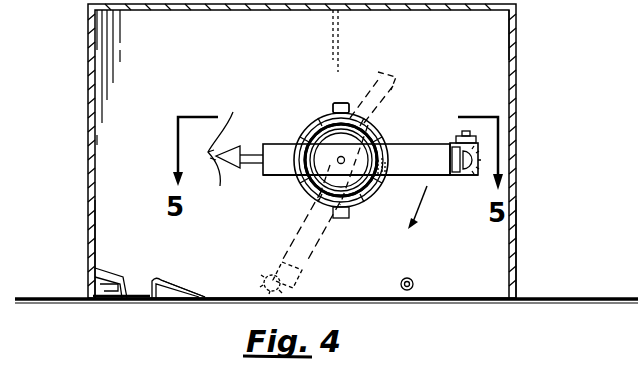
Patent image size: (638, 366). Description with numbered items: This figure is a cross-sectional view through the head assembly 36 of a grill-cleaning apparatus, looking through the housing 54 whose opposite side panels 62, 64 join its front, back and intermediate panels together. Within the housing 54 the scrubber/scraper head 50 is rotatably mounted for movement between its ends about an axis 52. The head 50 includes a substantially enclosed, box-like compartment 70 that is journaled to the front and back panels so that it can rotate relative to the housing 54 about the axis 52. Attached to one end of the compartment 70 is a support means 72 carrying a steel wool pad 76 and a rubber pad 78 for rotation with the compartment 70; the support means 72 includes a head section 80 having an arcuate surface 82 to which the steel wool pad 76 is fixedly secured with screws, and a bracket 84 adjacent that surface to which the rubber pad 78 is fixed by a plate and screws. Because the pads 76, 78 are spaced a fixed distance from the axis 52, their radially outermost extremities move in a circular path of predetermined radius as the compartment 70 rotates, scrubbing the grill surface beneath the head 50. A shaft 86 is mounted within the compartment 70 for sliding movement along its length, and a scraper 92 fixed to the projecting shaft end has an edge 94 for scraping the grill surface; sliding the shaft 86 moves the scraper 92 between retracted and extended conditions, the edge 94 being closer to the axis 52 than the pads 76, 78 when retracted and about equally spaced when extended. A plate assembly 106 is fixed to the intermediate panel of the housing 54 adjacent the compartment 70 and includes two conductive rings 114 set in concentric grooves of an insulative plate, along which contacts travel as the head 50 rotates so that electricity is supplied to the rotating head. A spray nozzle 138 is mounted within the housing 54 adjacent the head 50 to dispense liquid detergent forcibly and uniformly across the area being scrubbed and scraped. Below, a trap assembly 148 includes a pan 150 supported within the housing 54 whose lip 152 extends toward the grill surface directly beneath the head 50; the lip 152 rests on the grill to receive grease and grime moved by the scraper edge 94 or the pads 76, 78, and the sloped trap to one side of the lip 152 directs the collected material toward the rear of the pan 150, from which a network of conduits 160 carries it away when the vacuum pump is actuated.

The head assembly 36 is at (492, 91).
The housing 54 is at (517, 40).
The side panel 64 is at (518, 240).
The scrubber/scraper head 50 is at (400, 143).
The head section 80 is at (452, 160).
The compartment 70 is at (278, 170).
The axis 52 is at (338, 157).
The plate assembly 106 is at (319, 108).
The conductive rings 114 is at (369, 196).
The support means 72 is at (431, 176).
The scraper 92 is at (388, 74).
The scraper edge 94 is at (226, 140).
The shaft 86 is at (252, 148).
The bracket 84 is at (452, 140).
The rubber pad 78 is at (487, 141).
The steel wool pad 76 is at (478, 163).
The arcuate surface 82 is at (463, 176).
The trap assembly 148 is at (118, 246).
The side panel 62 is at (88, 257).
The conduits 160 is at (110, 279).
The pan 150 is at (160, 279).
The lip 152 is at (178, 287).
The spray nozzle 138 is at (413, 280).